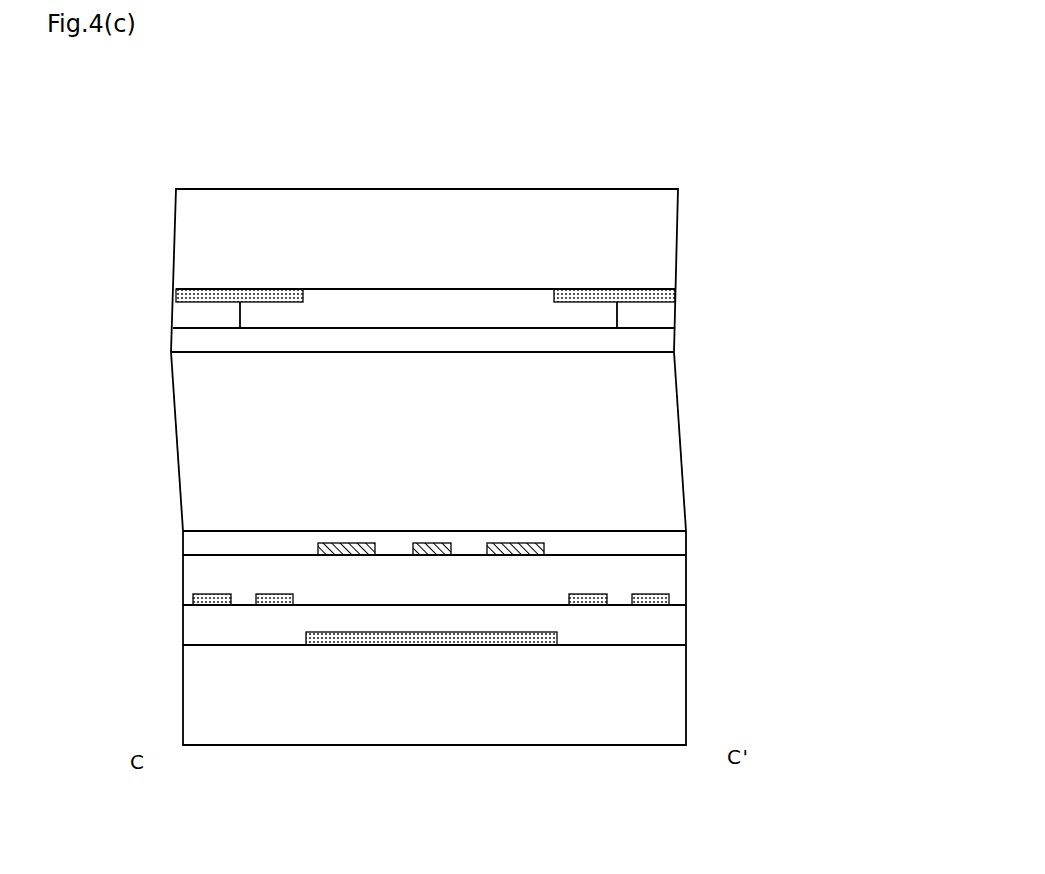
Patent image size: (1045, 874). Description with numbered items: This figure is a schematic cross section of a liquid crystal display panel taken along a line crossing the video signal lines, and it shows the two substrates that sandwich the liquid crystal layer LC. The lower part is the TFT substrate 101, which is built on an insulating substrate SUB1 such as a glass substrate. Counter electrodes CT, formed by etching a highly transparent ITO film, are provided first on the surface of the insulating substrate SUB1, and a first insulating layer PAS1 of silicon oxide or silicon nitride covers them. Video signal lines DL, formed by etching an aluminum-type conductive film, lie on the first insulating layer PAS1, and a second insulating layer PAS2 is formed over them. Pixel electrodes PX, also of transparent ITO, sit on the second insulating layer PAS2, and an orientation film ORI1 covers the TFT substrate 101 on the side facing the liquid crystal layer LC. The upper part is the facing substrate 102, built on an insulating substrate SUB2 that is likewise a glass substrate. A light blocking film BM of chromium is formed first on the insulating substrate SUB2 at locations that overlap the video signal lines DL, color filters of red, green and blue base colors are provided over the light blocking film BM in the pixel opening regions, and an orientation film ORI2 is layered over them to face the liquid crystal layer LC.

The insulating substrate SUB2 is at (397, 243).
The light blocking film BM is at (272, 295).
The orientation film ORI2 is at (630, 339).
The liquid crystal layer LC is at (243, 407).
The orientation film ORI1 is at (283, 543).
The pixel electrode PX is at (347, 547).
The second insulating layer PAS2 is at (594, 573).
The video signal line DL is at (212, 598).
The first insulating layer PAS1 is at (633, 624).
The counter electrode CT is at (483, 640).
The insulating substrate SUB1 is at (379, 707).
The facing substrate 102 is at (166, 190).
The TFT substrate 101 is at (168, 530).